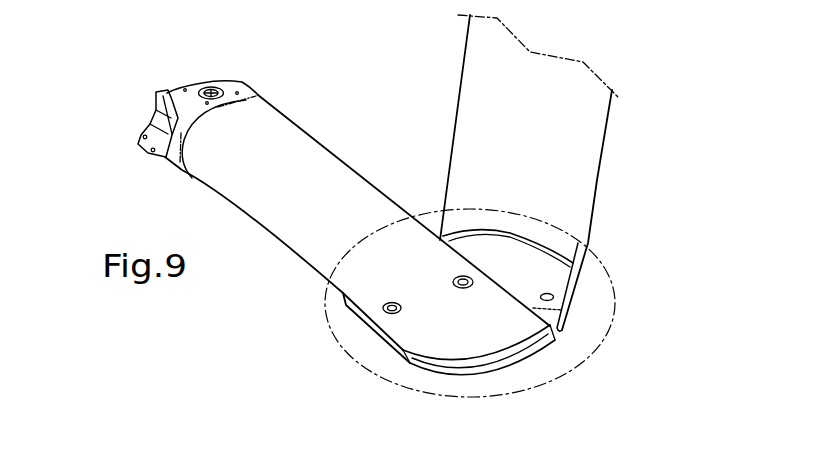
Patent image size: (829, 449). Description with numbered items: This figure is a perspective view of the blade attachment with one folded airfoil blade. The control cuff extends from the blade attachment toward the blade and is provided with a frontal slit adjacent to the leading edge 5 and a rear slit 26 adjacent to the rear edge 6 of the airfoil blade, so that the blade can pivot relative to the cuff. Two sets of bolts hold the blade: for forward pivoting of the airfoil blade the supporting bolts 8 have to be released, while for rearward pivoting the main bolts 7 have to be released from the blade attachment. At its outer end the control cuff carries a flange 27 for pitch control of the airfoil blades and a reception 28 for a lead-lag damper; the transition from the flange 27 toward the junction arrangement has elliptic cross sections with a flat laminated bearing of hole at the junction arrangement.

The reception 28 is at (210, 87).
The flange 27 is at (145, 128).
The leading edge 5 is at (457, 110).
The rear edge 6 is at (598, 196).
The main bolts 7 is at (463, 274).
The supporting bolts 8 is at (392, 301).
The rear slit 26 is at (357, 316).